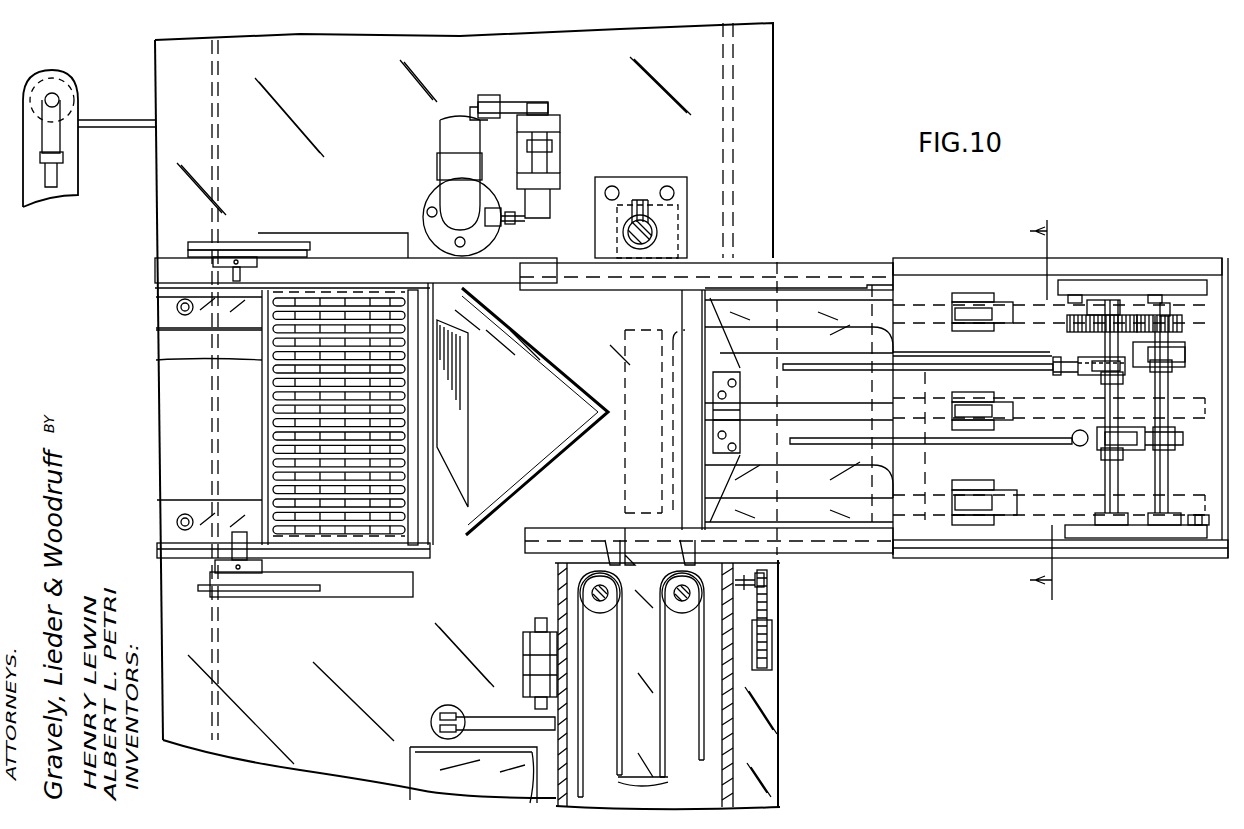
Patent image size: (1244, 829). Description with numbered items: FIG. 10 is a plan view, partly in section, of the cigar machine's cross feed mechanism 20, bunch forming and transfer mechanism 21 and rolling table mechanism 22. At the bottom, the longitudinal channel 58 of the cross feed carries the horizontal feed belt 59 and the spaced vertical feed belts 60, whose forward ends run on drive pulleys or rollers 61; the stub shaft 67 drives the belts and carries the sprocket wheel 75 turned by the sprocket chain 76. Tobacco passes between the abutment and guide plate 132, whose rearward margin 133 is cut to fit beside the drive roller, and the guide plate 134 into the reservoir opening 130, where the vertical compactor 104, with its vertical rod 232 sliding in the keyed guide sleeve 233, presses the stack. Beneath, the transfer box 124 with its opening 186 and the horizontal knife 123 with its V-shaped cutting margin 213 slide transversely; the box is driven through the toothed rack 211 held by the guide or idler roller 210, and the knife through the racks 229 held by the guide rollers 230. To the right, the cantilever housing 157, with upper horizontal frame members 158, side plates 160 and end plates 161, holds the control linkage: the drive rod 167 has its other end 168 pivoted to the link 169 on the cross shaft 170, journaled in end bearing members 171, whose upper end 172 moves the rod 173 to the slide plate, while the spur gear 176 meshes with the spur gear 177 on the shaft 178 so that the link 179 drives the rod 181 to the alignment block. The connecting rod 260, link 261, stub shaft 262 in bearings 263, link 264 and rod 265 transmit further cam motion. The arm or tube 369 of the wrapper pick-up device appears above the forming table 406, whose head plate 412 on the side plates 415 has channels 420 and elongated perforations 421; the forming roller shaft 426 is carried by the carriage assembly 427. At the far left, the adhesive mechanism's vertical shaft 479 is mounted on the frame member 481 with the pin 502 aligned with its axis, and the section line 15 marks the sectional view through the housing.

The section line 15- 15 is at (1022, 410).
The cross feed mechanism 20 is at (782, 704).
The bunch forming and transfer mechanism 21 is at (818, 240).
The rolling table mechanism 22 is at (366, 608).
The longitudinal channel 58 is at (658, 727).
The horizontal feed belt 59 is at (635, 732).
The vertical feed belts 60 is at (660, 670).
The drive pulleys or rollers 61 is at (597, 608).
The stub shaft 67 is at (768, 580).
The sprocket wheel 75 is at (768, 615).
The sprocket chain 76 is at (772, 638).
The vertical compactor 104 is at (705, 198).
The horizontal knife 123 is at (498, 292).
The transfer box 124 is at (722, 353).
The reservoir opening 130 is at (640, 458).
The abutment and guide plate 132 is at (618, 545).
The rearward margin 133 is at (600, 578).
The guide plate 134 is at (660, 545).
The cantilever housing 157 is at (1114, 259).
The upper horizontal frame members 158 is at (1085, 560).
The side plates 160 is at (1120, 548).
The end plates 161 is at (1215, 535).
The drive rod 167 is at (950, 356).
The other end of drive rod 168 is at (1200, 344).
The link 169 is at (1185, 440).
The cross shaft 170 is at (1168, 395).
The end bearing members 171 is at (1148, 278).
The upper end of link 172 is at (1120, 427).
The rod 173 is at (808, 443).
The spur gear 176 is at (1168, 300).
The spur gear 177 is at (1067, 330).
The shaft 178 is at (1104, 476).
The link 179 is at (1102, 372).
The rod 181 is at (813, 372).
The transfer box opening 186 is at (443, 375).
The guide or idler roller 210 is at (980, 408).
The toothed rack 211 is at (935, 402).
The V-shaped cutting margin 213 is at (570, 360).
The racks 229 is at (918, 300).
The guide rollers 230 is at (975, 308).
The vertical rod 232 is at (625, 232).
The keyed guide sleeve 233 is at (652, 205).
The connecting rod 260 is at (500, 222).
The link 261 is at (522, 220).
The stub shaft 262 is at (548, 160).
The bearings 263 is at (553, 133).
The link 264 is at (536, 100).
The rod 265 is at (490, 95).
The arm or tube 369 is at (440, 145).
The forming table 406 is at (252, 412).
The head plate 412 is at (158, 358).
The side plates 415 is at (255, 250).
The channels 420 is at (350, 300).
The elongated perforations 421 is at (300, 300).
The shaft 426 is at (210, 270).
The carriage assembly 427 is at (270, 612).
The vertical shaft 479 is at (58, 78).
The frame member 481 is at (95, 118).
The pin 502 is at (58, 96).